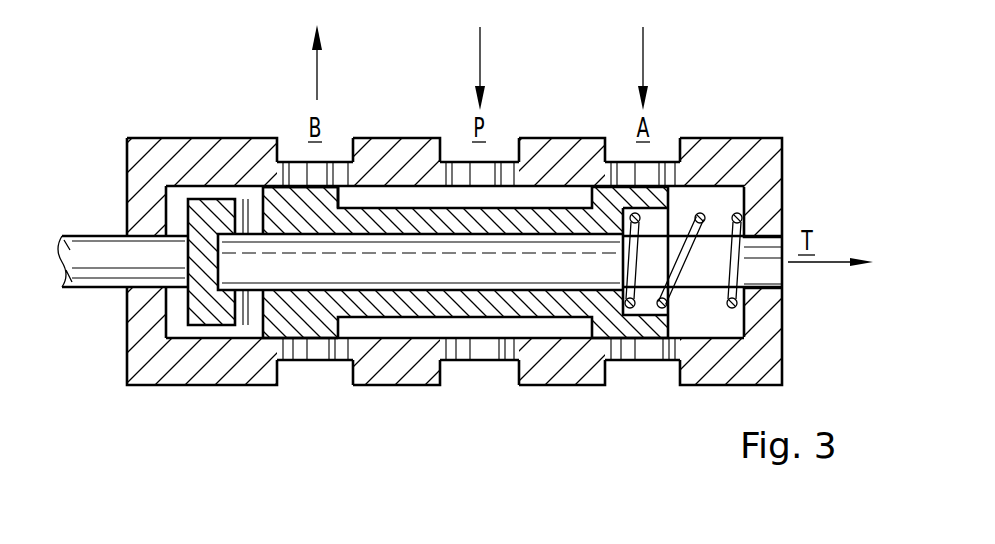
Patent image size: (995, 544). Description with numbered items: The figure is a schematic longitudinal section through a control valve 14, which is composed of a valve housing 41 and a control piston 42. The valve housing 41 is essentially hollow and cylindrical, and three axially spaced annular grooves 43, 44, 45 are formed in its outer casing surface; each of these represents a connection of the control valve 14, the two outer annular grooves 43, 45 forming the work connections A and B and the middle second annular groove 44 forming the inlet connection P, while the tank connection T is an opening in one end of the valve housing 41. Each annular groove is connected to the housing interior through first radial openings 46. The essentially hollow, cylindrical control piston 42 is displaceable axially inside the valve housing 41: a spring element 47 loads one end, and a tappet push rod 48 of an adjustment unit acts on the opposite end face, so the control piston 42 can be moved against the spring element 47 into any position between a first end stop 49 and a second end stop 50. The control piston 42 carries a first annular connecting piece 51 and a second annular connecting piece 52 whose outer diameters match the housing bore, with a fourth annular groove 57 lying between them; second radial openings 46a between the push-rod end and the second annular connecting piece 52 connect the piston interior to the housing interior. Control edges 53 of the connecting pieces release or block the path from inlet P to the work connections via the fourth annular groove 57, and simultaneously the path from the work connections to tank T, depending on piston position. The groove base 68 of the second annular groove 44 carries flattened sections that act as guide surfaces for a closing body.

The control valve 14 is at (145, 130).
The valve housing 41 is at (205, 128).
The control piston 42 is at (569, 330).
The first annular groove 43 is at (290, 385).
The second annular groove 44 is at (449, 385).
The third annular groove 45 is at (613, 385).
The first radial openings 46 is at (332, 352).
The second radial openings 46a is at (250, 314).
The spring element 47 is at (695, 240).
The tappet push rod 48 is at (106, 250).
The first end stop 49 is at (740, 332).
The second end stop 50 is at (172, 322).
The first annular connecting piece 51 is at (621, 183).
The second annular connecting piece 52 is at (303, 190).
The control edges 53 is at (252, 162).
The fourth annular groove 57 is at (458, 200).
The groove base 68 is at (330, 168).